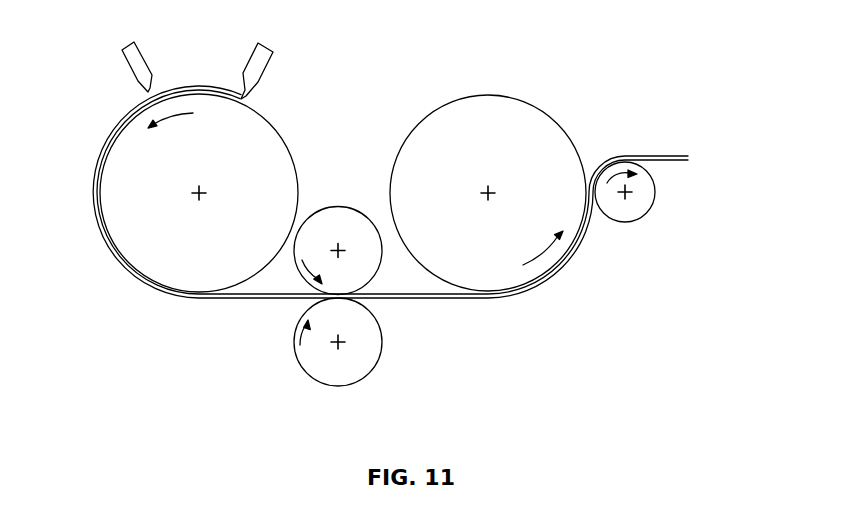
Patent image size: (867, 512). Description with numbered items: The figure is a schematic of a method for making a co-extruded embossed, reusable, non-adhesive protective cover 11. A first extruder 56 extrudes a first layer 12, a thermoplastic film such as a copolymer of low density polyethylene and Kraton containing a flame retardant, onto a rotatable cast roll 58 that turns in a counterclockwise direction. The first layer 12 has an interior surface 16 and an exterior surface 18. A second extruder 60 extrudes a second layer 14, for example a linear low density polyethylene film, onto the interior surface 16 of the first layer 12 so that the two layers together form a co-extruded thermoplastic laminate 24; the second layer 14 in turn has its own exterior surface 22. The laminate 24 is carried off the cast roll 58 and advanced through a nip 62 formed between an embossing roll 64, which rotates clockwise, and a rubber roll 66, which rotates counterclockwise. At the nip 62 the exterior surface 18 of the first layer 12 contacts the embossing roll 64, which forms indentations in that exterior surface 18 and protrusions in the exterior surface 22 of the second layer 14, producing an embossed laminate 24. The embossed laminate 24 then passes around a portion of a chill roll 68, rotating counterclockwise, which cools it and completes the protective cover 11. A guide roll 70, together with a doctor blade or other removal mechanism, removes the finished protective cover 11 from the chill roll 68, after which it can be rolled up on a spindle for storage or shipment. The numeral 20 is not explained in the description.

The co-extruded embossed, reusable, non-adhesive protective cover 11 is at (686, 137).
The first layer 12 is at (207, 84).
The second layer 14 is at (117, 118).
The interior surface 16 is at (242, 95).
The exterior surface 18 is at (240, 99).
The adhesion layer 20 is at (157, 95).
The exterior surface 22 is at (100, 158).
The co-extruded thermoplastic laminate 24 is at (242, 300).
The first extruder 56 is at (262, 45).
The cast roll 58 is at (250, 143).
The second extruder 60 is at (133, 55).
The nip 62 is at (381, 289).
The embossing roll 64 is at (332, 222).
The rubber roll 66 is at (357, 360).
The chill roll 68 is at (538, 104).
The guide roll 70 is at (650, 207).